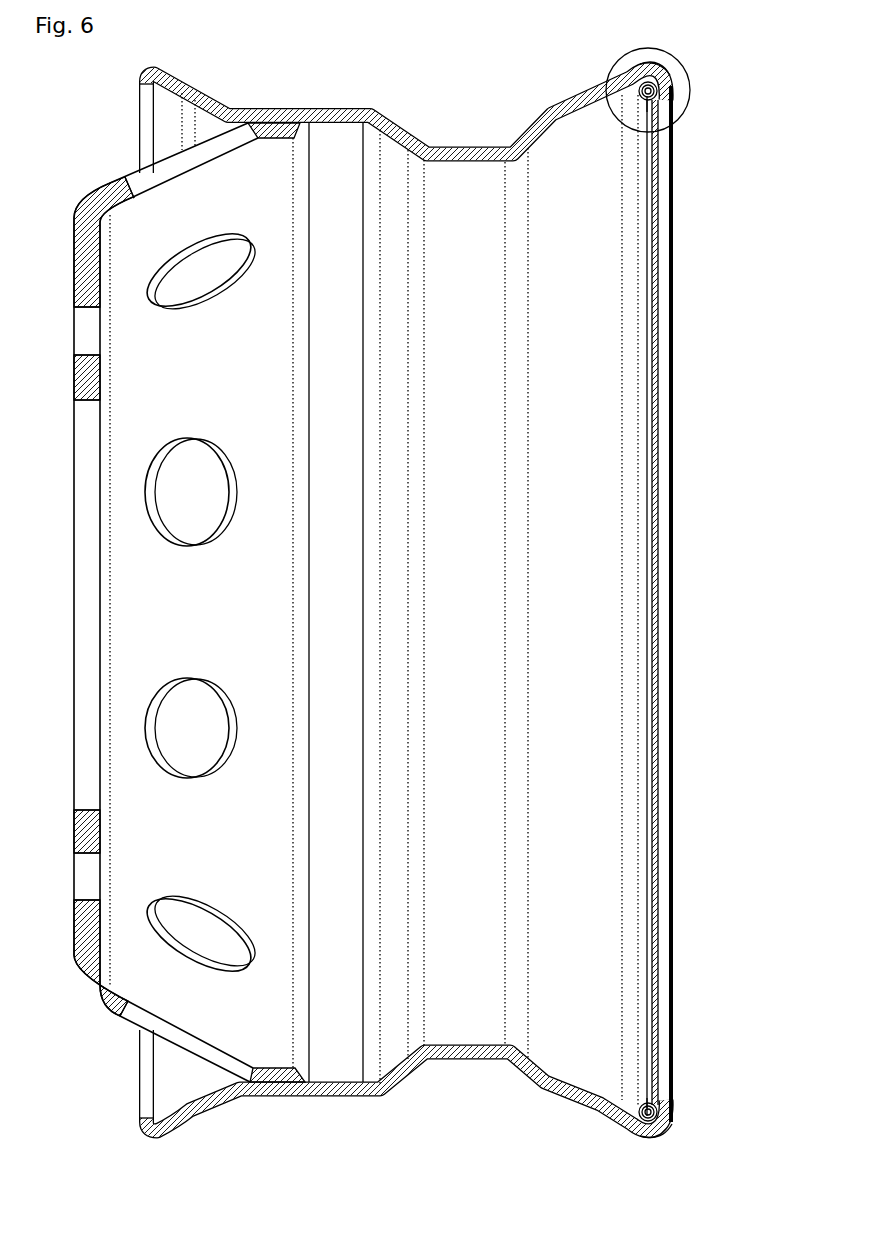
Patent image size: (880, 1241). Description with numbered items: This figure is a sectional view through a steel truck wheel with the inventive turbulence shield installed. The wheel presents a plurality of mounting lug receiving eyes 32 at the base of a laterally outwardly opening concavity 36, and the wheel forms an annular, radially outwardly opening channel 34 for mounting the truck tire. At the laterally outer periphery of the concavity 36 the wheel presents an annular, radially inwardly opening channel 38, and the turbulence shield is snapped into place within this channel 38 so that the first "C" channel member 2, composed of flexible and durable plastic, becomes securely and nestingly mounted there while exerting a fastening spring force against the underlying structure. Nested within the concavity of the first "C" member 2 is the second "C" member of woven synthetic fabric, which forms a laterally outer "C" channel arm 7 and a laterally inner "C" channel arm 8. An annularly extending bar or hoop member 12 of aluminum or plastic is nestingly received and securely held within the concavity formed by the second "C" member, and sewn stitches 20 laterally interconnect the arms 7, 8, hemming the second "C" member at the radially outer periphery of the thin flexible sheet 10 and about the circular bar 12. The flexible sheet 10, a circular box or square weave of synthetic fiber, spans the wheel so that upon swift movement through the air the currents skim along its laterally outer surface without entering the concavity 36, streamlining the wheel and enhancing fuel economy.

The first "C" channel member 2 is at (658, 100).
The laterally outer "C" channel arm 7 is at (630, 50).
The laterally inner "C" channel arm 8 is at (648, 133).
The flexible sheet 10 is at (655, 646).
The bar or hoop member 12 is at (648, 100).
The sewn stitches 20 is at (650, 117).
The mounting lug receiving eyes 32 is at (82, 330).
The radially outwardly opening channel 34 is at (458, 115).
The laterally outwardly opening concavity 36 is at (439, 634).
The radially inwardly opening channel 38 is at (650, 80).